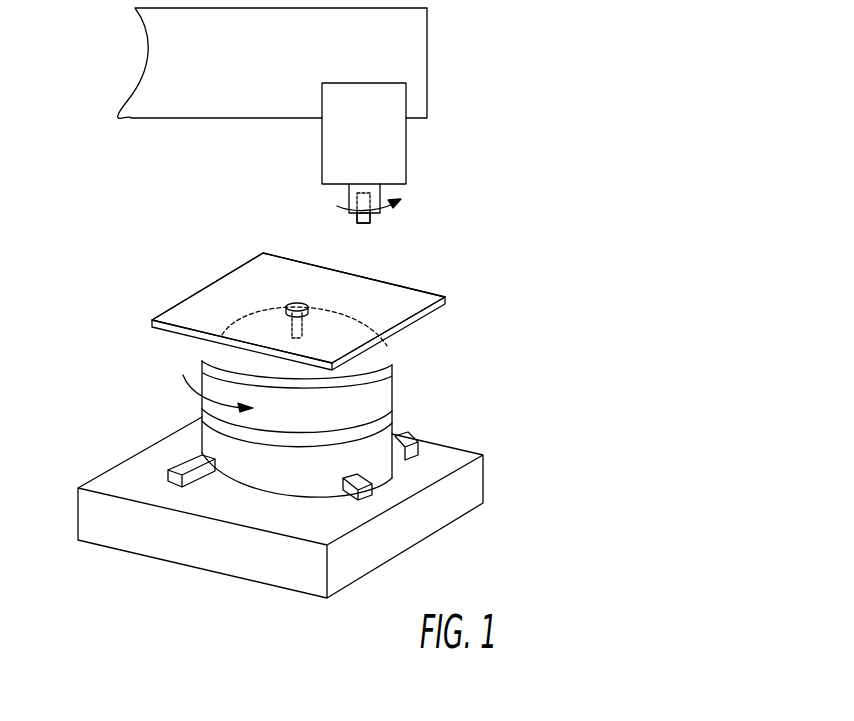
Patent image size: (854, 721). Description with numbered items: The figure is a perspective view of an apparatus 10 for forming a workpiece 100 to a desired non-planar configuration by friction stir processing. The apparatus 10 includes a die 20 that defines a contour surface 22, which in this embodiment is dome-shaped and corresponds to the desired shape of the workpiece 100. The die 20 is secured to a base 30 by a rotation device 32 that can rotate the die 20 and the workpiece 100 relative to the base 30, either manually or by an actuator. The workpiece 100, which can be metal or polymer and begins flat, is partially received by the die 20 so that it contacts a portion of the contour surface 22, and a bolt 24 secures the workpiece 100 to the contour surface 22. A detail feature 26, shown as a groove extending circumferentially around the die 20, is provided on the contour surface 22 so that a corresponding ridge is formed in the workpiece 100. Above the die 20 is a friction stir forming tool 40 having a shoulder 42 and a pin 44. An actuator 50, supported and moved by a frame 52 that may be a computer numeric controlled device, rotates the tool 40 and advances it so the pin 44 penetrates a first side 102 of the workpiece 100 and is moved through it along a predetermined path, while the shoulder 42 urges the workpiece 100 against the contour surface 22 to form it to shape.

The apparatus 10 is at (602, 159).
The die 20 is at (412, 378).
The contour surface 22 is at (393, 370).
The bolt 24 is at (290, 302).
The detail feature 26 is at (202, 361).
The base 30 is at (463, 447).
The rotation device 32 is at (393, 415).
The friction stir forming tool 40 is at (412, 192).
The shoulder 42 is at (353, 227).
The pin 44 is at (364, 223).
The actuator 50 is at (406, 133).
The frame 52 is at (192, 118).
The workpiece 100 is at (503, 262).
The first side 102 is at (427, 262).